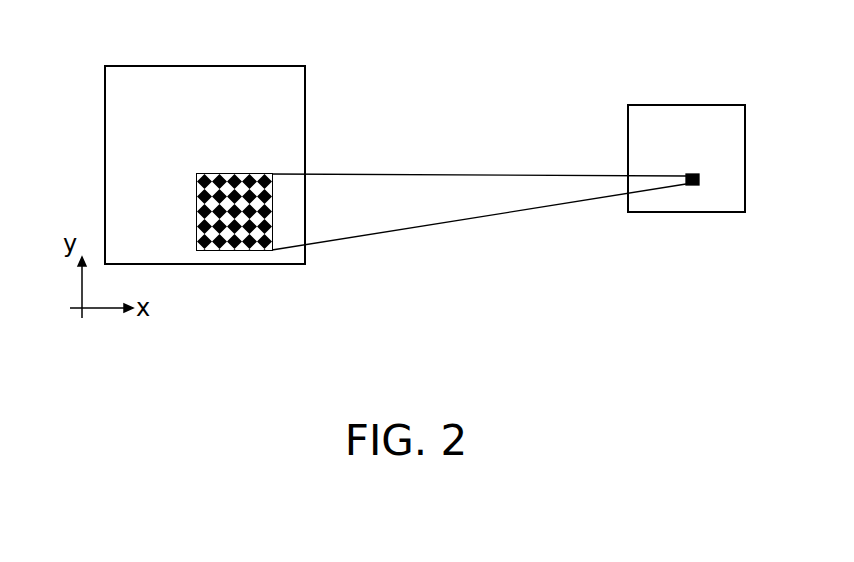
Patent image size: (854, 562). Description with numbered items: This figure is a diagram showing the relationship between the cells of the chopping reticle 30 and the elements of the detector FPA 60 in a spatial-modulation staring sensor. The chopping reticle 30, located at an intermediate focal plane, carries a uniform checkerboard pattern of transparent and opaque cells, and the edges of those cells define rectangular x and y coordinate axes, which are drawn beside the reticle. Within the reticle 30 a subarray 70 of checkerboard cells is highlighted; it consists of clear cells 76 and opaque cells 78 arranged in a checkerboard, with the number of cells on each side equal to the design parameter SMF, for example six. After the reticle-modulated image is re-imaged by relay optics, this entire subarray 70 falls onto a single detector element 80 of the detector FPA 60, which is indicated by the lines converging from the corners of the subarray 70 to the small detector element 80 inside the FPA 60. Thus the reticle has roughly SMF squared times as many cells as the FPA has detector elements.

The chopping reticle 30 is at (218, 66).
The detector FPA 60 is at (688, 105).
The subarray of checkerboard cells 70 is at (205, 166).
The clear cells 76 is at (238, 240).
The opaque cells 78 is at (233, 174).
The detector element 80 is at (690, 174).